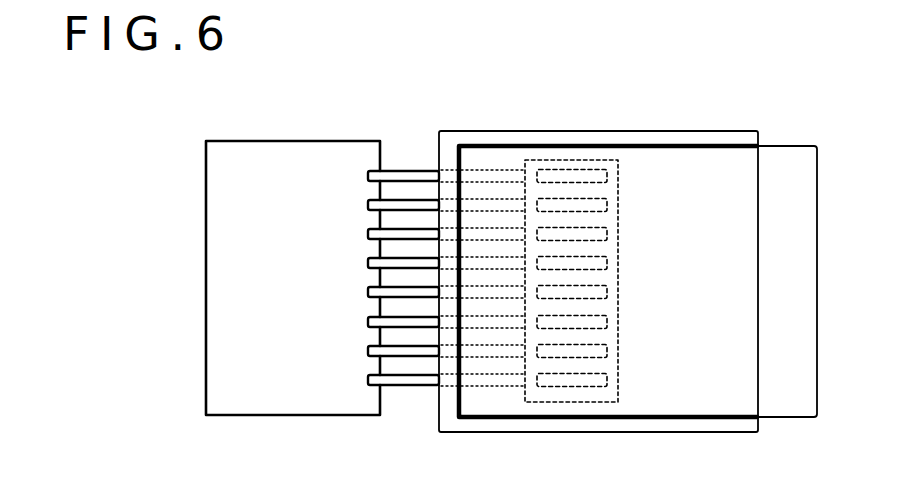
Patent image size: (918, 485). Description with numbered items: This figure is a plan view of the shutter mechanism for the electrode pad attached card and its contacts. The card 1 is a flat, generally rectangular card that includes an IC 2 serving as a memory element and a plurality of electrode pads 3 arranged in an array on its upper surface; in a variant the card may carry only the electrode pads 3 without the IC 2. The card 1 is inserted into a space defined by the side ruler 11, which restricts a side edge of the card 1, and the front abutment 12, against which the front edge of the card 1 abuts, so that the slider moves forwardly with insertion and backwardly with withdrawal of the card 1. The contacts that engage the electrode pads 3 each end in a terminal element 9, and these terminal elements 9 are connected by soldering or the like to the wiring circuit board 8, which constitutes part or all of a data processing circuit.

The card 1 is at (790, 148).
The IC 2 is at (575, 160).
The electrode pads 3 is at (605, 287).
The wiring circuit board 8 is at (268, 142).
The terminal element 9 is at (368, 175).
The side ruler 11 is at (520, 136).
The front abutment 12 is at (443, 160).